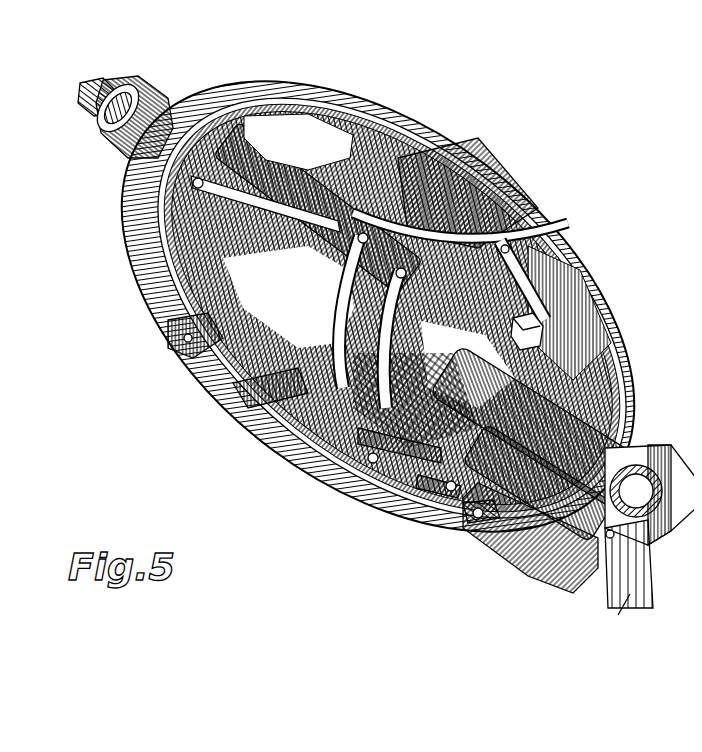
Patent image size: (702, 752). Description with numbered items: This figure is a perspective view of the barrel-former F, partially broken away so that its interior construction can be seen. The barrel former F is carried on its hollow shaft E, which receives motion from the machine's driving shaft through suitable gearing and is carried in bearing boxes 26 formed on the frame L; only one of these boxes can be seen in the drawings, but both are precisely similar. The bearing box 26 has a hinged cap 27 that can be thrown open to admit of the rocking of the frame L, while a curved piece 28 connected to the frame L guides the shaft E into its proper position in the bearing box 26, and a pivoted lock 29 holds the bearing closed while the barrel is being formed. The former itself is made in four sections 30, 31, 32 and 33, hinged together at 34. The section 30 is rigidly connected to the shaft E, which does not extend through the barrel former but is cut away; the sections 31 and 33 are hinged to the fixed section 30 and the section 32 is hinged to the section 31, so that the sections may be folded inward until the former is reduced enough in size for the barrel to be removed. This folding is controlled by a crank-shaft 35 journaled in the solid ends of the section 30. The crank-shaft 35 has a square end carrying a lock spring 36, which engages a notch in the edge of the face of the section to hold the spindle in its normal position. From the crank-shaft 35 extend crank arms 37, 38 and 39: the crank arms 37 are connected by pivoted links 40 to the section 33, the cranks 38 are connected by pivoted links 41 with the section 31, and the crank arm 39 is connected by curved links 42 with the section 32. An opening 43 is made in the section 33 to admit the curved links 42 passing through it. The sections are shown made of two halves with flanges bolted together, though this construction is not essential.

The bearing box 26 is at (605, 440).
The cap 27 is at (505, 548).
The curved piece 28 is at (622, 532).
The pivoted lock 29 is at (617, 378).
The section 30 is at (613, 302).
The section 31 is at (470, 510).
The section 32 is at (195, 283).
The section 33 is at (445, 187).
The hinge 34 is at (540, 240).
The crank-shaft 35 is at (497, 213).
The lock spring 36 is at (540, 310).
The crank arm 37 is at (263, 96).
The crank arm 38 is at (368, 143).
The crank arm 39 is at (545, 255).
The pivoted link 40 is at (228, 173).
The pivoted link 41 is at (180, 328).
The curved link 42 is at (250, 385).
The opening 43 is at (215, 218).
The shaft E is at (649, 474).
The barrel-former F is at (123, 141).
The frame L is at (617, 619).